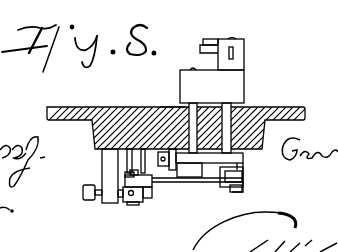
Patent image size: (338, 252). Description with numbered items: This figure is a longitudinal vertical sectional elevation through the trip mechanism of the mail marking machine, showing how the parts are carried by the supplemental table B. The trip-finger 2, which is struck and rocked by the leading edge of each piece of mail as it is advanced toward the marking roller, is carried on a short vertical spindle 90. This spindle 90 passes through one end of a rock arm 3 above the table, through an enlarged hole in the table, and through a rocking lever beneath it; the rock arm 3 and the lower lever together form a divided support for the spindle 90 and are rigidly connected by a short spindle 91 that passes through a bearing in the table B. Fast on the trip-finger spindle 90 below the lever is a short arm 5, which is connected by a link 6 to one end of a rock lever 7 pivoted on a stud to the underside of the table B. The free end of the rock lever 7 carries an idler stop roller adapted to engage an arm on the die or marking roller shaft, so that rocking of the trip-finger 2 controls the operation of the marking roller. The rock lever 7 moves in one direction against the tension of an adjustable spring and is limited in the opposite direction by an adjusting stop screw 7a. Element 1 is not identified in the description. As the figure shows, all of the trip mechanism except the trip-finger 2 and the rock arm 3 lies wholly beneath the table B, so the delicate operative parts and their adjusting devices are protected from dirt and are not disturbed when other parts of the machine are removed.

The supplemental table B is at (298, 107).
The short spindle 91 is at (172, 107).
The trip-finger 2 is at (212, 39).
The short vertical spindle 90 is at (233, 119).
The rock arm 3 is at (246, 80).
The short arm 5 is at (244, 178).
The link 6 is at (175, 183).
The bracket 1 is at (205, 162).
The rock lever 7 is at (135, 203).
The adjusting stop screw 7a is at (98, 200).